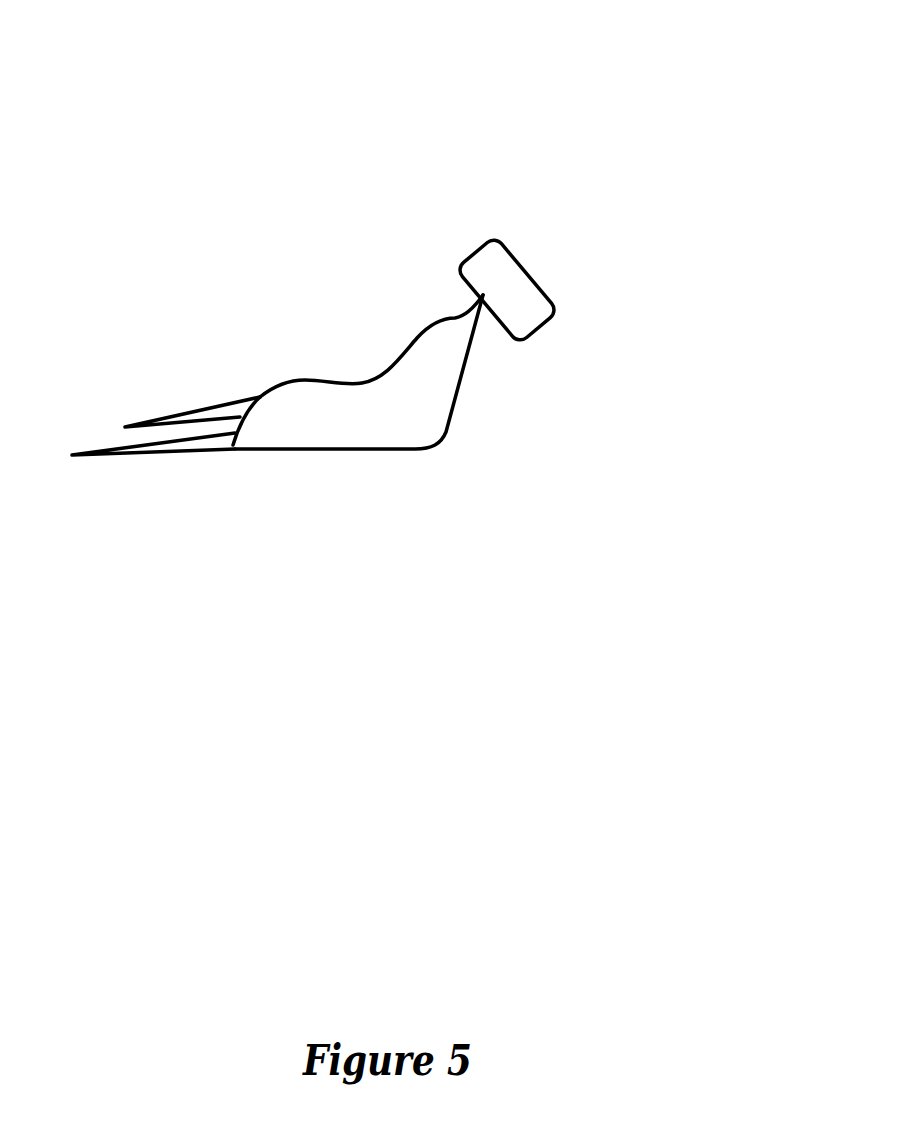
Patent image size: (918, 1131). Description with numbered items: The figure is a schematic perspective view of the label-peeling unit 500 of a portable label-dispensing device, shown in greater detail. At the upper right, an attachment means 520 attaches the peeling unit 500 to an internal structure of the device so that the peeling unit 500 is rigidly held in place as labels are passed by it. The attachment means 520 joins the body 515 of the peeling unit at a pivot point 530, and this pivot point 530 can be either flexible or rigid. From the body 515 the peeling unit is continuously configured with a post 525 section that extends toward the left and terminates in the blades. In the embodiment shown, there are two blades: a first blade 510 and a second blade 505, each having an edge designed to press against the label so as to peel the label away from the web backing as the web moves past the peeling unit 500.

The peeling unit 500 is at (648, 202).
The second blade 505 is at (183, 413).
The first blade 510 is at (150, 450).
The body 515 is at (373, 405).
The attachment means 520 is at (537, 315).
The post 525 is at (263, 433).
The pivot point 530 is at (483, 295).